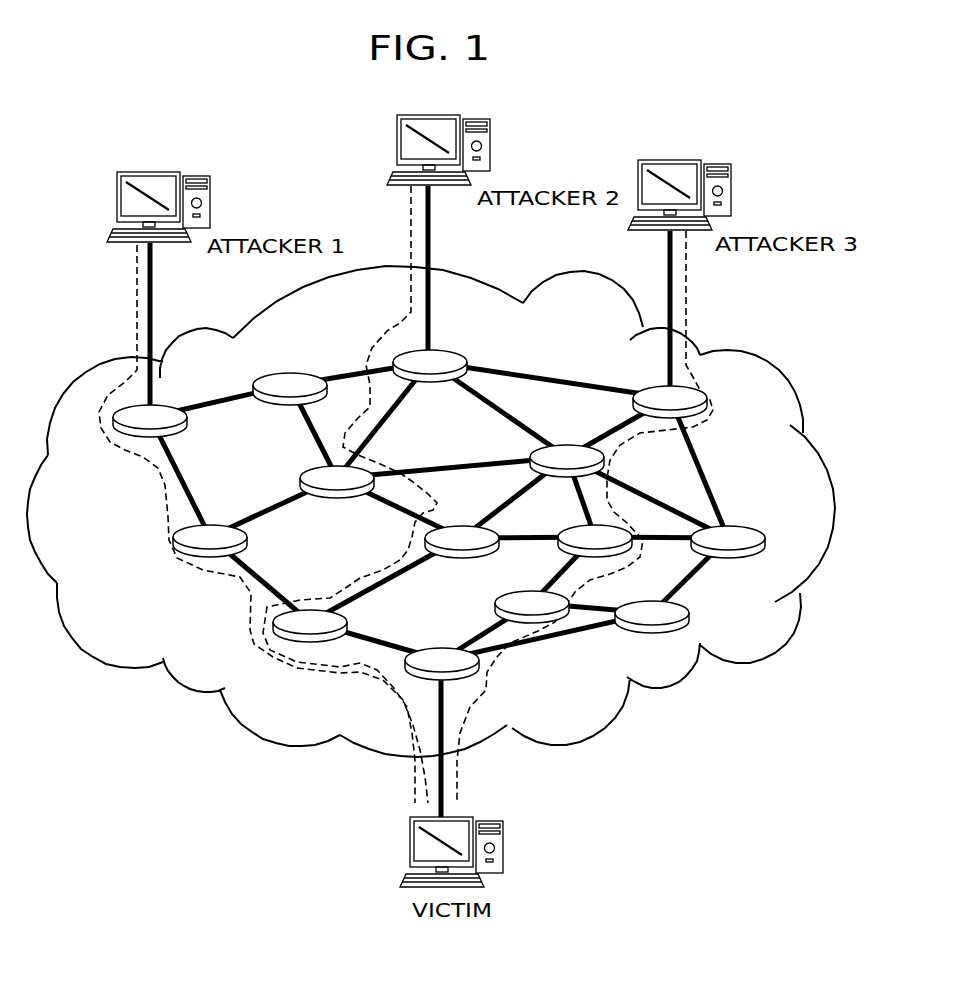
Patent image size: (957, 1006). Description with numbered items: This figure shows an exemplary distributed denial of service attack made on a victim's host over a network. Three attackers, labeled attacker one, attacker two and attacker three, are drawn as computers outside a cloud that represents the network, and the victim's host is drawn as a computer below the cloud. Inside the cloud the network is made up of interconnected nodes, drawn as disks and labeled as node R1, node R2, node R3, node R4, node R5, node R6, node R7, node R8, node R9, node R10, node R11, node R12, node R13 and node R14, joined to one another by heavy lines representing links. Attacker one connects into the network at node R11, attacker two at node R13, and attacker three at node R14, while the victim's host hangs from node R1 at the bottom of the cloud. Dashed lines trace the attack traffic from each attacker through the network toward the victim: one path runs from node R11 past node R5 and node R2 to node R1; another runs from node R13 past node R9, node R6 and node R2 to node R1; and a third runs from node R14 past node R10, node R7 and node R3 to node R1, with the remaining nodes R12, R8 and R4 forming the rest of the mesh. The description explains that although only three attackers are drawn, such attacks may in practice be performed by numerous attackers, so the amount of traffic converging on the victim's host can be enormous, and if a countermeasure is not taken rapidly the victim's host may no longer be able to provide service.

The router R1 is at (442, 646).
The router R2 is at (331, 626).
The router R3 is at (532, 592).
The router R4 is at (671, 614).
The router R5 is at (228, 541).
The router R6 is at (462, 527).
The router R7 is at (588, 529).
The router R8 is at (738, 528).
The router R9 is at (337, 494).
The router R10 is at (567, 445).
The router R11 is at (161, 407).
The router R12 is at (290, 375).
The router R13 is at (441, 351).
The router R14 is at (660, 389).